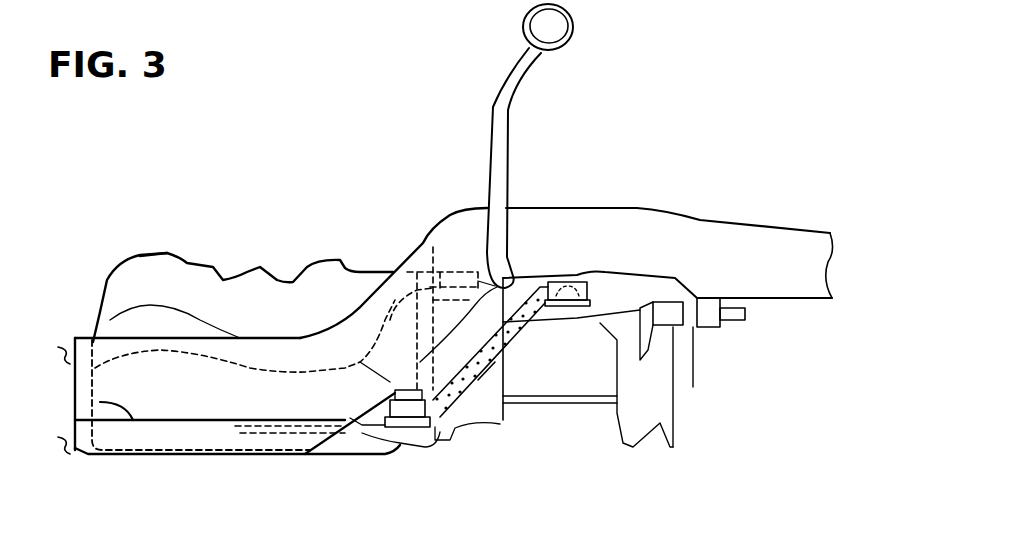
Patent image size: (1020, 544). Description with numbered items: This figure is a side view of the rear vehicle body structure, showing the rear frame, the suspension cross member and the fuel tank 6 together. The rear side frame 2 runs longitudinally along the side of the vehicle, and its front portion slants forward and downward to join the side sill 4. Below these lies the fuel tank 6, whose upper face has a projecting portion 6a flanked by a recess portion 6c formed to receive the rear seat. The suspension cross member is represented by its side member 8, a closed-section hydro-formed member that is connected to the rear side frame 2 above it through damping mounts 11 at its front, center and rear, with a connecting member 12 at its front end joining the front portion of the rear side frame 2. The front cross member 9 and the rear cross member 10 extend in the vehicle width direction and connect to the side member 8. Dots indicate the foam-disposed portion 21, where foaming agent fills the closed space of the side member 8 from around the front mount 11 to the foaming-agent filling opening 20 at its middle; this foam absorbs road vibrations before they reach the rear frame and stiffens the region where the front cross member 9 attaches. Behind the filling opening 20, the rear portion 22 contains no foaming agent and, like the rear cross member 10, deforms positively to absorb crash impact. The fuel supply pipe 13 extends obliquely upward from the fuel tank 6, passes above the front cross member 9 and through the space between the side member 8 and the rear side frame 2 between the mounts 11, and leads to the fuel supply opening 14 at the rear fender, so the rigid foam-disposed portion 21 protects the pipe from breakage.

The rear side frame 2 is at (640, 207).
The side sill 4 is at (100, 401).
The fuel tank 6 is at (237, 255).
The projecting portion 6a is at (182, 260).
The recess portion 6c is at (315, 366).
The side member 8 is at (517, 320).
The front cross member 9 is at (463, 272).
The rear cross member 10 is at (693, 387).
The mount 11 is at (552, 305).
The connecting member 12 is at (383, 453).
The fuel supply pipe 13 is at (430, 273).
The fuel supply opening 14 is at (573, 30).
The foaming-agent filling opening 20 is at (566, 282).
The foam-disposed portion 21 is at (489, 392).
The rear portion 22 is at (614, 299).